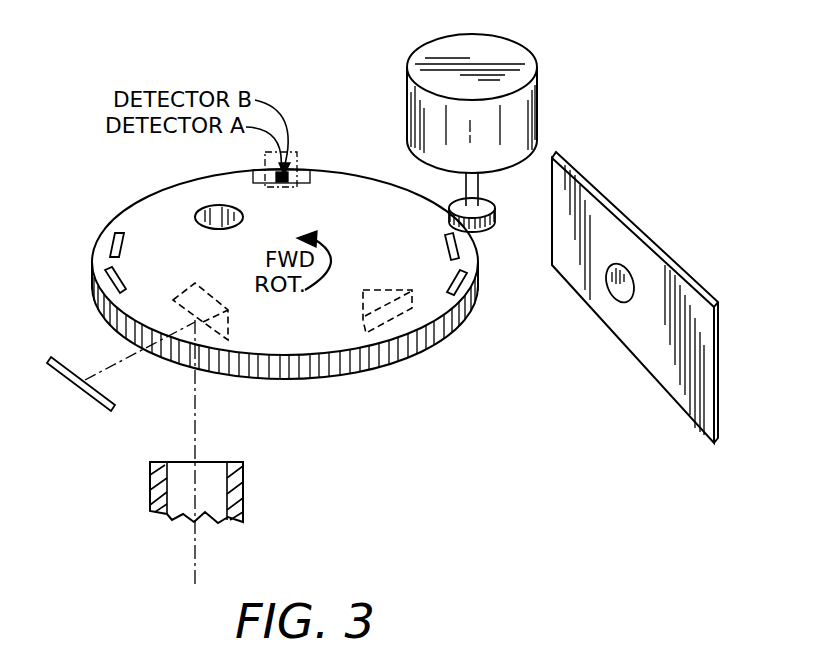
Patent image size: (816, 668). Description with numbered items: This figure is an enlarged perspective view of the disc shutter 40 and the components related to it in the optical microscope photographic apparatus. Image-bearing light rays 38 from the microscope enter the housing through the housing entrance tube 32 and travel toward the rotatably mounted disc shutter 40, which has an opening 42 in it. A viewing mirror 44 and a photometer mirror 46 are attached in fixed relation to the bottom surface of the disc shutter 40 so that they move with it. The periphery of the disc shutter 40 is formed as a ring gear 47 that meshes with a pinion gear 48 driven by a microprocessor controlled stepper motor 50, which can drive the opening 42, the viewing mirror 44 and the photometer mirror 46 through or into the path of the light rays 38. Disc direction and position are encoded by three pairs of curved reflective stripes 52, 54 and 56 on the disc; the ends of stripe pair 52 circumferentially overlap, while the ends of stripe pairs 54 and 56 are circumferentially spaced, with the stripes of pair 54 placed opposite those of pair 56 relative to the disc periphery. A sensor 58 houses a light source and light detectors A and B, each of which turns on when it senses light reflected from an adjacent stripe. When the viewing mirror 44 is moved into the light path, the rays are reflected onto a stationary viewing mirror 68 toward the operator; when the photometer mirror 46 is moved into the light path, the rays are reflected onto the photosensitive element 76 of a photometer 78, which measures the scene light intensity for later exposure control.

The housing entrance tube 32 is at (242, 485).
The image-bearing light rays 38 is at (198, 572).
The disc shutter 40 is at (364, 178).
The opening 42 is at (212, 208).
The viewing mirror 44 is at (236, 312).
The photometer mirror 46 is at (360, 330).
The ring gear 47 is at (414, 347).
The pinion gear 48 is at (484, 218).
The stepper motor 50 is at (506, 55).
The pair of reflective stripes 52 is at (310, 183).
The pair of reflective stripes 54 is at (438, 270).
The pair of reflective stripes 56 is at (122, 268).
The sensor 58 is at (268, 160).
The stationary viewing mirror 68 is at (84, 386).
The photosensitive element 76 is at (612, 292).
The photometer 78 is at (600, 222).